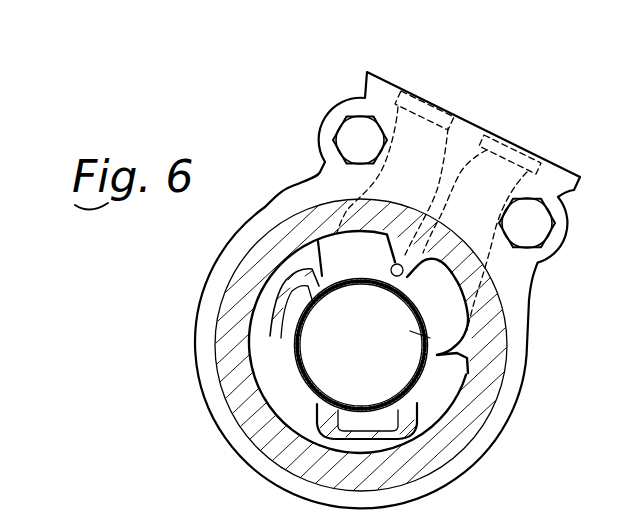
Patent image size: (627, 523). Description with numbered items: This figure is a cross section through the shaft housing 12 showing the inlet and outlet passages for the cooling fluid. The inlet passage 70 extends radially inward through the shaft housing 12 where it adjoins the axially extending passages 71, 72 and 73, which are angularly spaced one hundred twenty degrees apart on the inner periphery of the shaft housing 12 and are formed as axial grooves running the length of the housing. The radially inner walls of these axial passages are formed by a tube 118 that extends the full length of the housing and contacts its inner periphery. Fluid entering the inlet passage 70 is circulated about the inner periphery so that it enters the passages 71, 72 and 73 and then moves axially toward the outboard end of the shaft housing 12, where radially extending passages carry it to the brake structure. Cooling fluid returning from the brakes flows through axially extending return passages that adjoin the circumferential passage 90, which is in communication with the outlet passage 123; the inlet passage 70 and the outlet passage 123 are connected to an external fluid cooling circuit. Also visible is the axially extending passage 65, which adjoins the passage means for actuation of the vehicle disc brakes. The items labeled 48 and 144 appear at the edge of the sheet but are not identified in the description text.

The shaft housing 12 is at (340, 107).
The outlet passage 123 is at (418, 138).
The inlet passage 70 is at (497, 177).
The axially extending passage 65 is at (391, 268).
The axially extending passage 73 is at (288, 327).
The axially extending passage 71 is at (438, 306).
The axially extending passage 72 is at (367, 421).
The tube 118 is at (420, 373).
The circumferential passage 90 is at (281, 406).
The part 48 is at (464, 517).
The part 144 is at (511, 517).